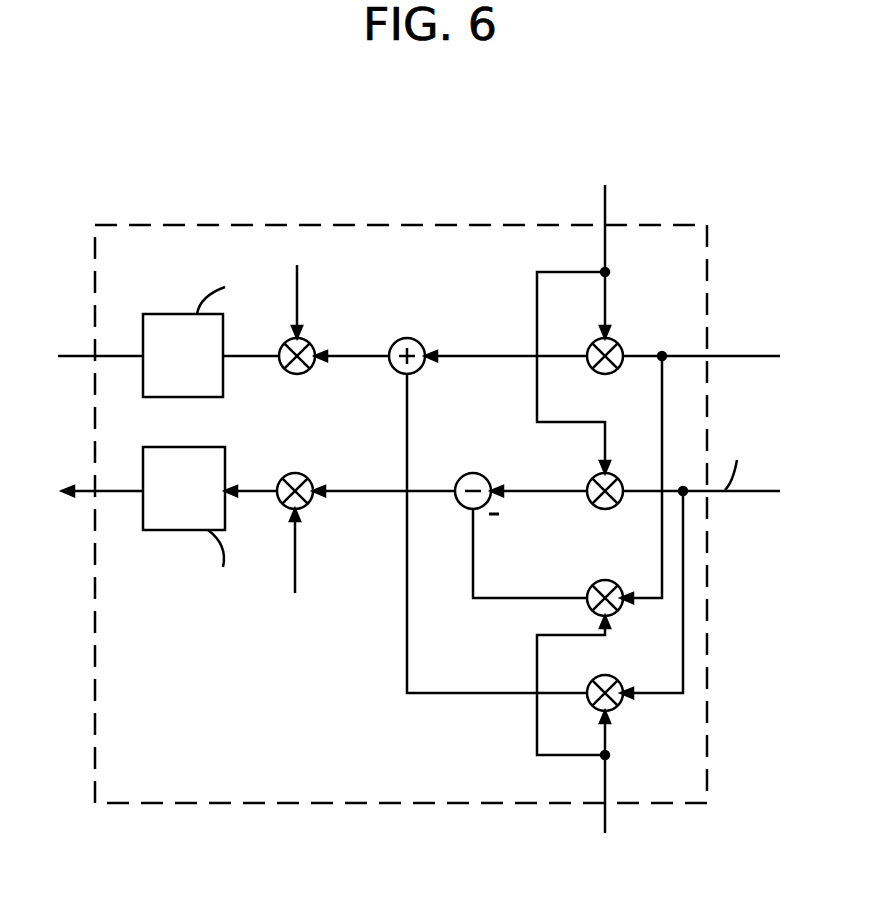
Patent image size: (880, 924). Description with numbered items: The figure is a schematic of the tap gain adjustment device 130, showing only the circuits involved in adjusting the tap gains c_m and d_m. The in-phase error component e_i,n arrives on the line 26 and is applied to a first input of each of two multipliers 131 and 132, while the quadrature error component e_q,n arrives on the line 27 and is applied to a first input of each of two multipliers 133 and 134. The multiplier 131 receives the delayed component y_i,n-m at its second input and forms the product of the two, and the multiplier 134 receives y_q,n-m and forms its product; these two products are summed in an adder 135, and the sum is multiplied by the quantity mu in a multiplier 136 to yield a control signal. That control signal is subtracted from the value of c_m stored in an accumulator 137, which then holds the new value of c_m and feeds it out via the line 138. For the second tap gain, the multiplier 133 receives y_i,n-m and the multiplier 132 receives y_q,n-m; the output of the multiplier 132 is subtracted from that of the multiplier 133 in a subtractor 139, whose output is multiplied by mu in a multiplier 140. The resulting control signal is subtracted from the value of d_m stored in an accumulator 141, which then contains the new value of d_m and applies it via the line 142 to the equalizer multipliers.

The tap gain adjustment device 130 is at (177, 803).
The multiplier 131 is at (622, 343).
The multiplier 132 is at (615, 578).
The multiplier 133 is at (620, 474).
The multiplier 134 is at (617, 677).
The adder 135 is at (410, 335).
The multiplier 136 is at (313, 340).
The accumulator 137 is at (196, 330).
The line 138 is at (110, 356).
The subtractor 139 is at (475, 472).
The multiplier 140 is at (307, 470).
The accumulator 141 is at (194, 519).
The line 142 is at (115, 491).
The line 26 is at (727, 356).
The line 27 is at (752, 493).